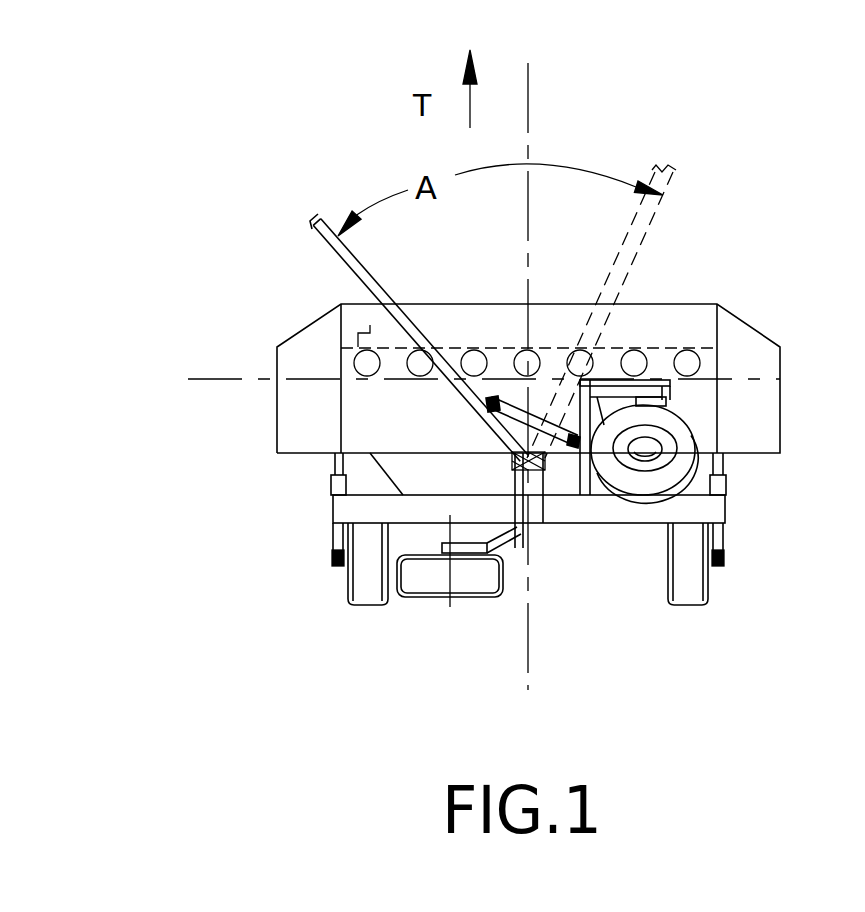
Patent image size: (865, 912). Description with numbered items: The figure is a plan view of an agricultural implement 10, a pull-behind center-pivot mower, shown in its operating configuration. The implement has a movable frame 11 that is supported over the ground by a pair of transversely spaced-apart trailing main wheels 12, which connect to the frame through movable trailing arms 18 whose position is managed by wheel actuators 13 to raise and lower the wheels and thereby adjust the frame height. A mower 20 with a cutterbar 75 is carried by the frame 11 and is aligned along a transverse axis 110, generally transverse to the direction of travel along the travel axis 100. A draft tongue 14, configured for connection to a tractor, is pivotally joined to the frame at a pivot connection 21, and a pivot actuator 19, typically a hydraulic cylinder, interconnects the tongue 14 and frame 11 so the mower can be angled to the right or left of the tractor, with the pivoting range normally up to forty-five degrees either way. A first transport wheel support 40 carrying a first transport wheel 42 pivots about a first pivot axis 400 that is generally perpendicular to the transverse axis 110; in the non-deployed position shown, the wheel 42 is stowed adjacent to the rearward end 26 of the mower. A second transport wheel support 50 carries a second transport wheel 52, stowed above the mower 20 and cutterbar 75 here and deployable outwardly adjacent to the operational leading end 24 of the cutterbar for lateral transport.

The agricultural implement 10 is at (720, 188).
The frame 11 is at (702, 512).
The trailing main wheels 12 is at (365, 598).
The wheel actuators 13 is at (337, 537).
The draft tongue 14 is at (320, 253).
The trailing arms 18 is at (335, 565).
The pivot actuator 19 is at (520, 412).
The mower 20 is at (340, 306).
The pivot connection 21 is at (566, 487).
The operational leading end of the cutterbar 24 is at (615, 345).
The rearward end 26 is at (282, 496).
The first transport wheel support 40 is at (514, 601).
The first transport wheel 42 is at (430, 593).
The second transport wheel support 50 is at (713, 395).
The second transport wheel 52 is at (685, 432).
The cutterbar 75 is at (690, 348).
The travel axis 100 is at (529, 113).
The transverse axis 110 is at (232, 378).
The first pivot axis 400 is at (532, 548).